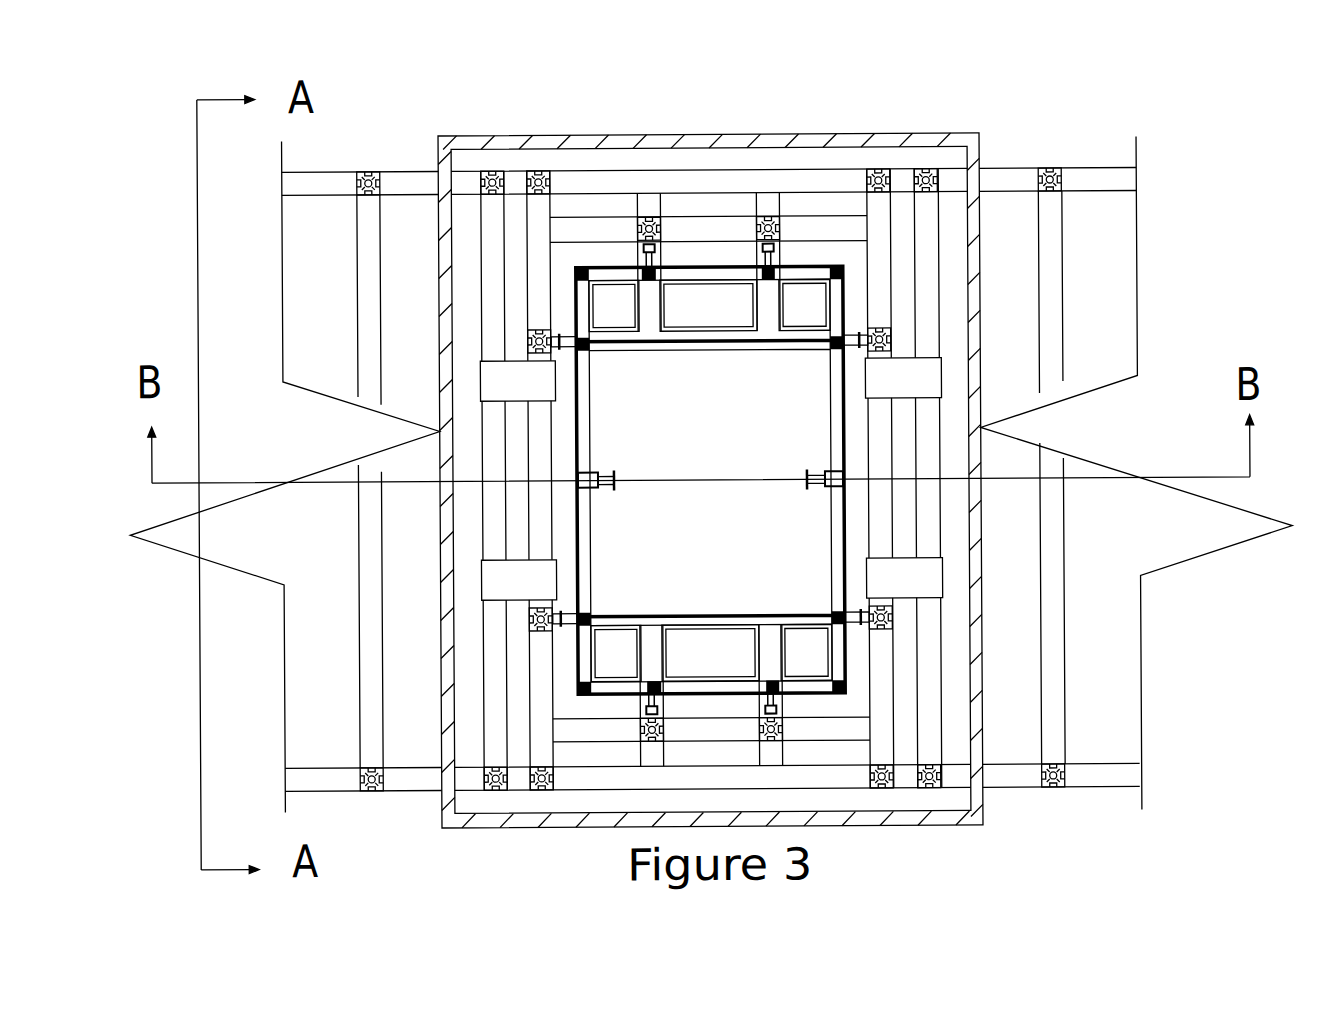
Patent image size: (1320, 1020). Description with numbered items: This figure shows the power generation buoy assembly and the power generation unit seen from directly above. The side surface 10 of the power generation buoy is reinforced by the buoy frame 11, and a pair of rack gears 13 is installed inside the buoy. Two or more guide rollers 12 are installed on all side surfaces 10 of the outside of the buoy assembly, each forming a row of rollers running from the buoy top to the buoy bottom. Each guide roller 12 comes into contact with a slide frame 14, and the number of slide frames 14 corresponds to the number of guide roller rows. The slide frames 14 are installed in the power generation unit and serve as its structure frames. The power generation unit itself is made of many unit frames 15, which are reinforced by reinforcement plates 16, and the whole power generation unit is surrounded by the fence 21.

The side surface 10 is at (693, 263).
The buoy frame 11 is at (589, 290).
The guide roller 12 is at (552, 329).
The rack gear 13 is at (825, 472).
The slide frame 14 is at (650, 220).
The unit frame 15 is at (712, 180).
The reinforcement plate 16 is at (927, 379).
The fence 21 is at (975, 674).